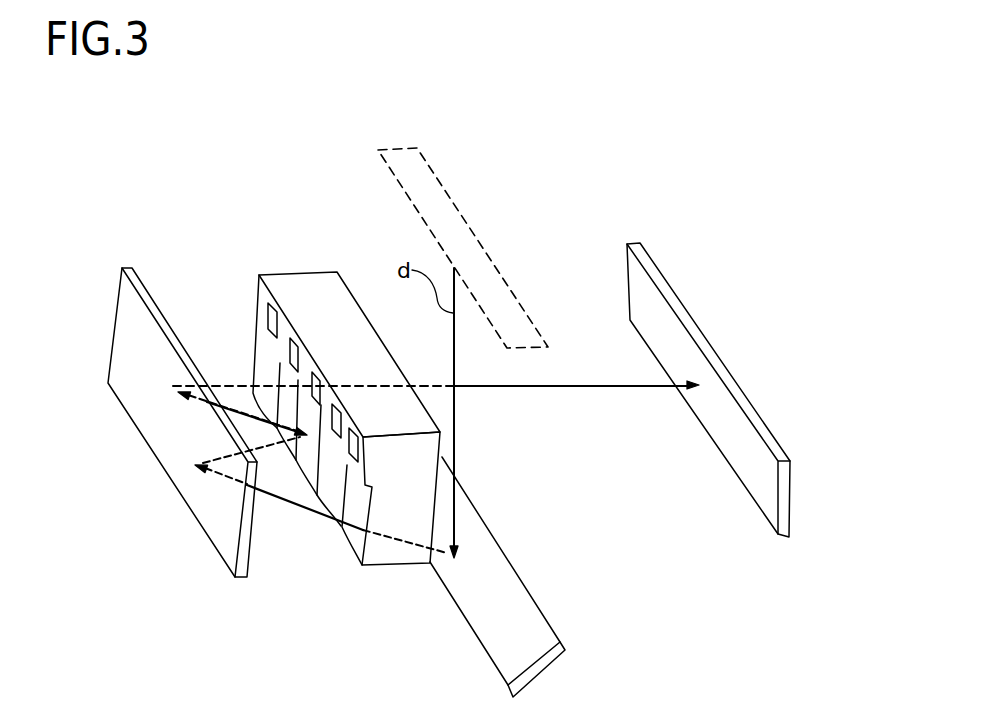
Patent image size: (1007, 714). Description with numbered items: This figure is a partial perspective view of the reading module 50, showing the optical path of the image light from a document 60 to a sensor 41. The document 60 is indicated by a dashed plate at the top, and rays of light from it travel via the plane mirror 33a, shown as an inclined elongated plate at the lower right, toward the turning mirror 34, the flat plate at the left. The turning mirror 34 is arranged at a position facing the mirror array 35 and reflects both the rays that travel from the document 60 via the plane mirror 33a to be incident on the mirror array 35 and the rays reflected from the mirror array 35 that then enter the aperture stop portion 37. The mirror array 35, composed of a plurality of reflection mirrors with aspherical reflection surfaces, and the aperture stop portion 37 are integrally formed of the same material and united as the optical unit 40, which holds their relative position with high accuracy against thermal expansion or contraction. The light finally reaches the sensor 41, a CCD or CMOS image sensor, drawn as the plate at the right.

The turning mirror 34 is at (150, 408).
The mirror array 35 is at (258, 377).
The aperture stop portion 37 is at (258, 303).
The optical unit 40 is at (301, 365).
The sensor 41 is at (768, 432).
The document 60 is at (463, 212).
The plane mirror 33a is at (542, 610).
The reading module 50 is at (660, 173).